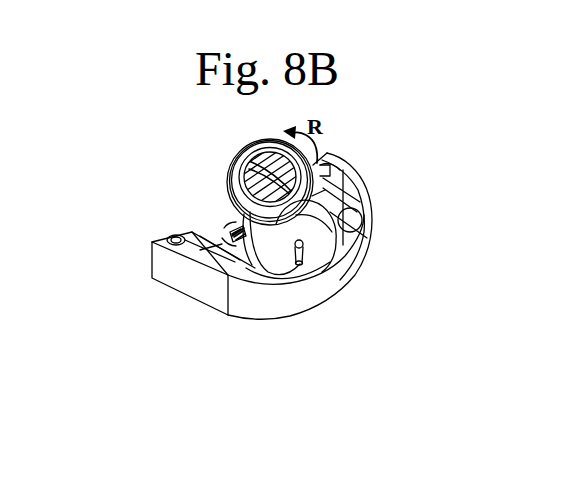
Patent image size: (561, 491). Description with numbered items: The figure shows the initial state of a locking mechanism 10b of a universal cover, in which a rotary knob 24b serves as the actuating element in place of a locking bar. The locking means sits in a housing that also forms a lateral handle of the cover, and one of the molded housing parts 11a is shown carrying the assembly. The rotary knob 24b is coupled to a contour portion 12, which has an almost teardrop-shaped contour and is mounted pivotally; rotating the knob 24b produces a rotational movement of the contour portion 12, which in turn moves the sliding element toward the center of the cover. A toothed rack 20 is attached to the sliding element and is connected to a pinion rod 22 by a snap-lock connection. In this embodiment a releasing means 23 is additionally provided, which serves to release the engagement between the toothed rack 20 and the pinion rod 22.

The locking mechanism 10b is at (525, 147).
The molded housing part 11a is at (363, 248).
The contour portion 12 is at (315, 241).
The toothed rack 20 is at (228, 228).
The pinion rod 22 is at (246, 238).
The releasing means 23 is at (297, 246).
The rotary knob 24b is at (240, 190).